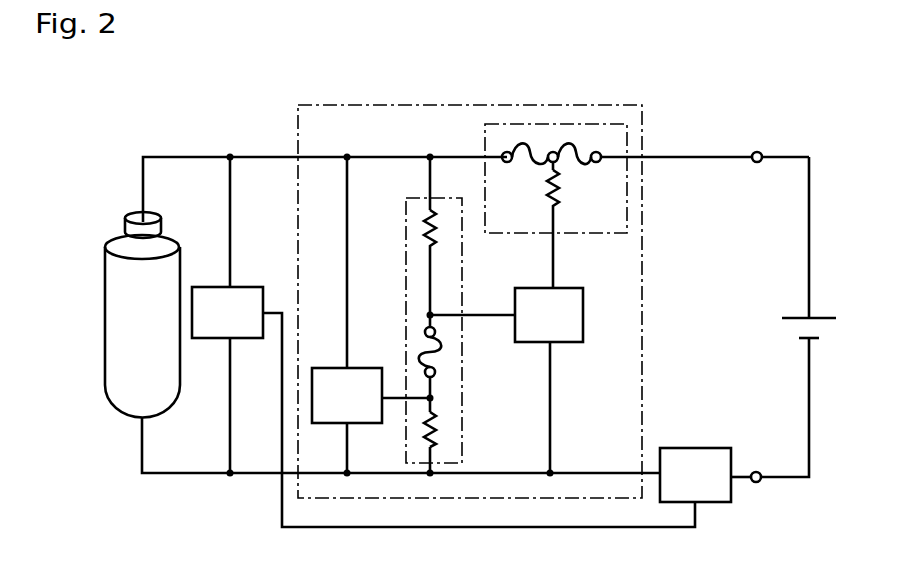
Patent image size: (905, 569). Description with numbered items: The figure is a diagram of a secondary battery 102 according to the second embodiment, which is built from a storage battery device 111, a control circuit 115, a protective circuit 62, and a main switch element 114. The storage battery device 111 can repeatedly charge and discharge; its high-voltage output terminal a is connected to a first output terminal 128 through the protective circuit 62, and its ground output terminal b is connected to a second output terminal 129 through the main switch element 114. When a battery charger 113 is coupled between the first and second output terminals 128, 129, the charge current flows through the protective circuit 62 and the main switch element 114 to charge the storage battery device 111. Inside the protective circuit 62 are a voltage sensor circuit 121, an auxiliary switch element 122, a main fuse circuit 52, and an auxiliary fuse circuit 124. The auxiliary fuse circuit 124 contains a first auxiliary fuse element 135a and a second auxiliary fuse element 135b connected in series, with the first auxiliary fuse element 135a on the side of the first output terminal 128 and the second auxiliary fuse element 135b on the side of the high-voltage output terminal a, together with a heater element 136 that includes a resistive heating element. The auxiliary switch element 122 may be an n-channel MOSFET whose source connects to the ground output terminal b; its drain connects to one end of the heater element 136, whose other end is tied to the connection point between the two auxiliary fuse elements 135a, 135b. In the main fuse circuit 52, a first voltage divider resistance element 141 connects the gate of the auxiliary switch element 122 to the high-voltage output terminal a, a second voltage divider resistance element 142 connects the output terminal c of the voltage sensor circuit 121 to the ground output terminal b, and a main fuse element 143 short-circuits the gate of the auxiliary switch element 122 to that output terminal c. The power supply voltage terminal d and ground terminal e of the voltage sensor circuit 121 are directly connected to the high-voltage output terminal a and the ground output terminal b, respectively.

The secondary battery 102 is at (207, 79).
The storage battery device 111 is at (112, 238).
The battery charger 113 is at (792, 316).
The main switch element 114 is at (690, 448).
The control circuit 115 is at (210, 338).
The voltage sensor circuit 121 is at (332, 367).
The auxiliary switch element 122 is at (584, 310).
The auxiliary fuse circuit 124 is at (627, 126).
The first output terminal 128 is at (757, 152).
The second output terminal 129 is at (757, 483).
The first auxiliary fuse element 135a is at (583, 150).
The second auxiliary fuse element 135b is at (512, 140).
The heater element 136 is at (568, 197).
The first voltage divider resistance element 141 is at (425, 218).
The second voltage divider resistance element 142 is at (442, 438).
The main fuse element 143 is at (421, 354).
The main fuse circuit 52 is at (462, 350).
The protective circuit 62 is at (415, 105).
The high-voltage output terminal a is at (146, 218).
The ground output terminal b is at (142, 420).
The output terminal c is at (383, 400).
The power supply voltage terminal d is at (348, 368).
The ground terminal e is at (344, 423).